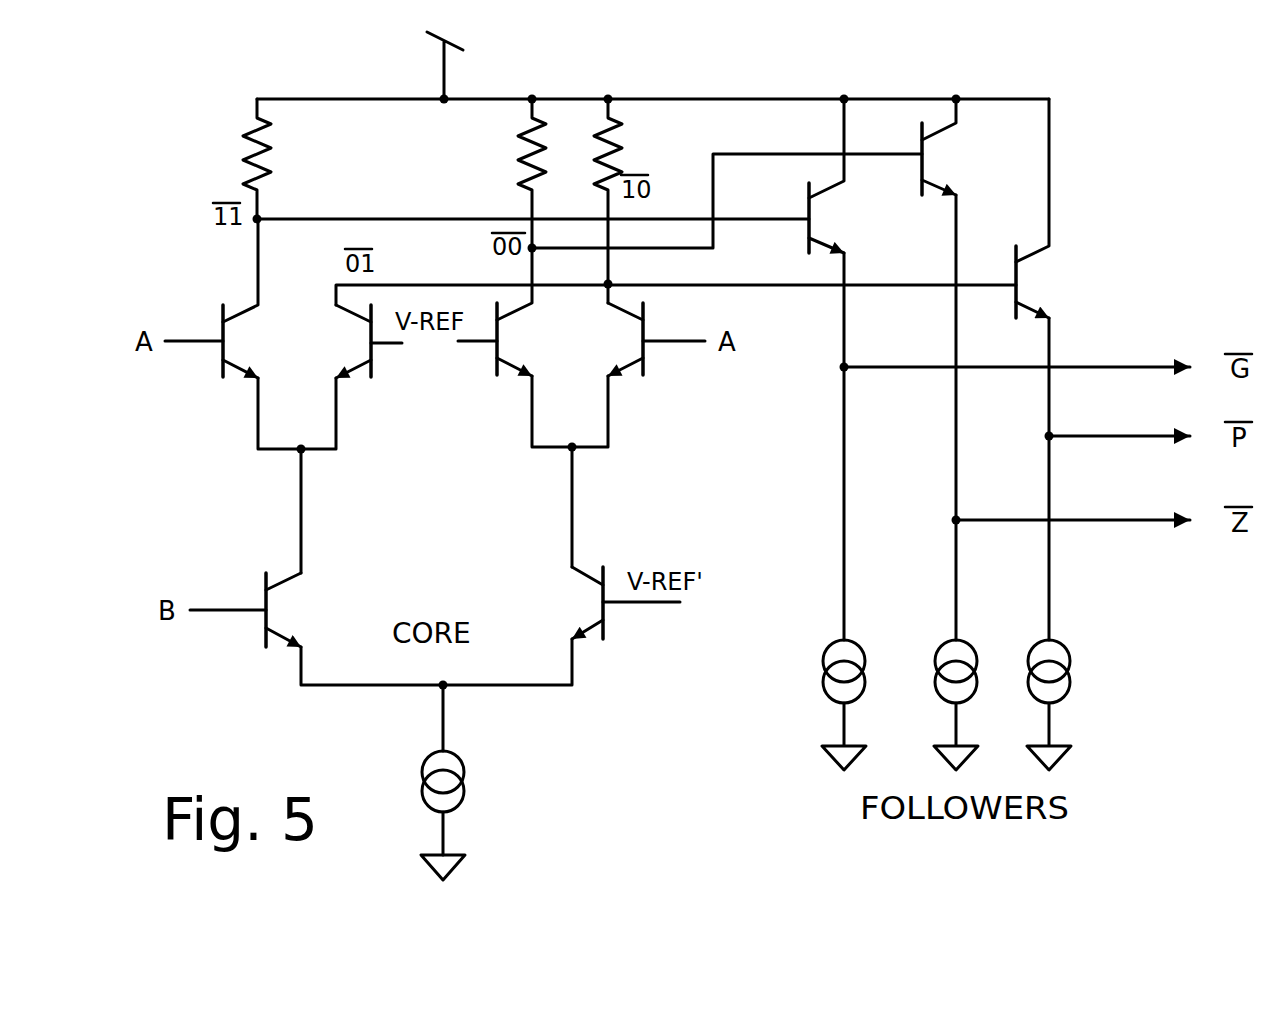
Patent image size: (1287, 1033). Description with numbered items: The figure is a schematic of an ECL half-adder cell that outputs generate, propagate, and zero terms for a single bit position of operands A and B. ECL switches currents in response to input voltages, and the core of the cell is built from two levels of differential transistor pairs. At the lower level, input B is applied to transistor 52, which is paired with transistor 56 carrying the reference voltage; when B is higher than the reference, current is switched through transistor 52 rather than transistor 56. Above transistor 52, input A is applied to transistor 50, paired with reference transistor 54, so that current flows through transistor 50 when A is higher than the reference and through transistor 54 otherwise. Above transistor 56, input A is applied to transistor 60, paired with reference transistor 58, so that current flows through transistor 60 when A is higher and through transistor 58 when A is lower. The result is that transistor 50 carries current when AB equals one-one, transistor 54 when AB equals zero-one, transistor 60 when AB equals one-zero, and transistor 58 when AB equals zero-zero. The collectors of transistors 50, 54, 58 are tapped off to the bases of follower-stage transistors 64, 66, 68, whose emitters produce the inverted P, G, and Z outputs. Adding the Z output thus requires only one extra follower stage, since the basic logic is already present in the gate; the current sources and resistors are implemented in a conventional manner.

The transistor 50 is at (247, 305).
The transistor 52 is at (300, 612).
The transistor 54 is at (362, 380).
The transistor 56 is at (572, 608).
The transistor 58 is at (508, 321).
The transistor 60 is at (636, 378).
The follower-stage transistor 64 is at (1028, 279).
The follower-stage transistor 66 is at (818, 213).
The follower-stage transistor 68 is at (930, 152).